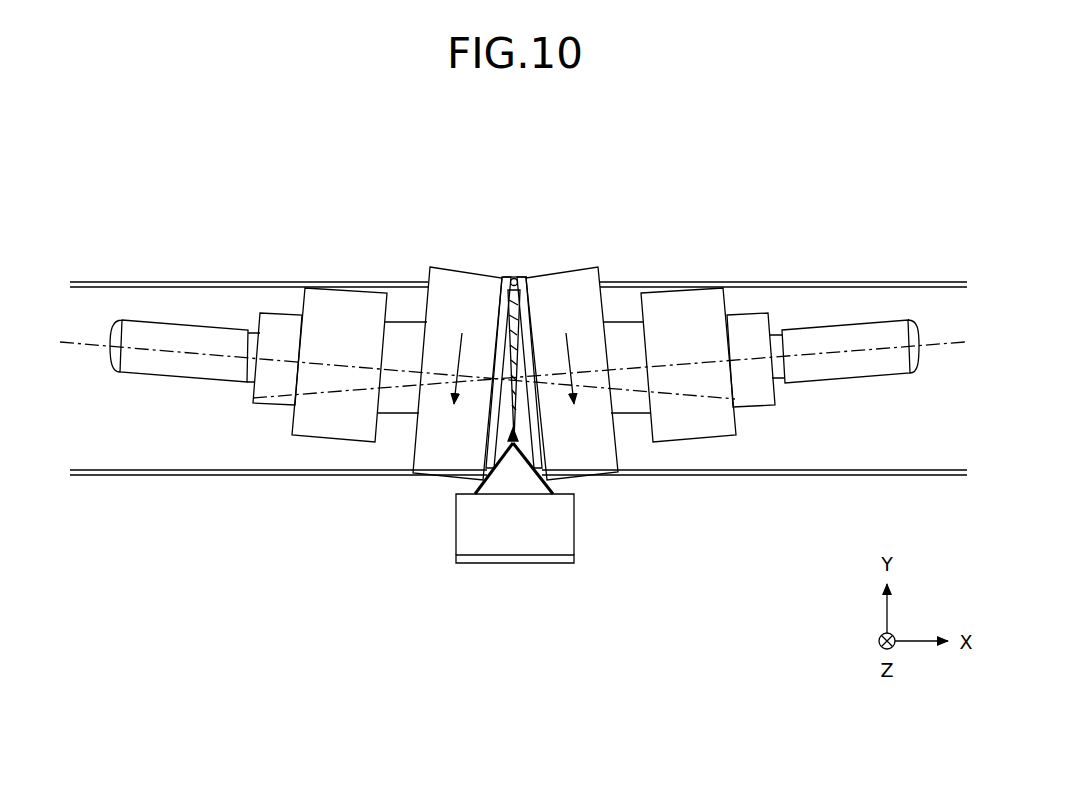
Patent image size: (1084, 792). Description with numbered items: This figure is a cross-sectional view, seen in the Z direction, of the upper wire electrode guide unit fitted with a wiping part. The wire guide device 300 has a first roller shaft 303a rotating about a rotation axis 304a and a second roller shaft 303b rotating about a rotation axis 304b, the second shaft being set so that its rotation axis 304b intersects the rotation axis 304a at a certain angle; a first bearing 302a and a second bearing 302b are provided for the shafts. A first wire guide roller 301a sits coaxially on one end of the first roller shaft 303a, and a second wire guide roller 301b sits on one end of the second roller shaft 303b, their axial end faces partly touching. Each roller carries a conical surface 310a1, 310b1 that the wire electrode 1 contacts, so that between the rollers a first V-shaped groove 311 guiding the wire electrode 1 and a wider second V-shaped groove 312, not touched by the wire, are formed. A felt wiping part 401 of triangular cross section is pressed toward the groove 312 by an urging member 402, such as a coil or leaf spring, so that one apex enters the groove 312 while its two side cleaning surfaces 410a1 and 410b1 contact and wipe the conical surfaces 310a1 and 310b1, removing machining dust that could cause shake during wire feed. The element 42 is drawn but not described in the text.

The wire electrode 1 is at (512, 276).
The wire guide device 300 is at (535, 155).
The first wire guide roller 301a is at (438, 463).
The second wire guide roller 301b is at (592, 463).
The first bearing 302a is at (330, 438).
The second bearing 302b is at (697, 438).
The first roller shaft 303a is at (168, 360).
The second roller shaft 303b is at (855, 360).
The rotation axis 304a is at (81, 342).
The rotation axis 304b is at (947, 342).
The conical surface 310a1 is at (502, 322).
The conical surface 310b1 is at (527, 322).
The groove 311 is at (526, 262).
The groove 312 is at (512, 448).
The wiping part 401 is at (522, 485).
The urging member 402 is at (514, 564).
The cleaning surface 410a1 is at (487, 470).
The cleaning surface 410b1 is at (541, 470).
The guide rails 42 is at (788, 450).